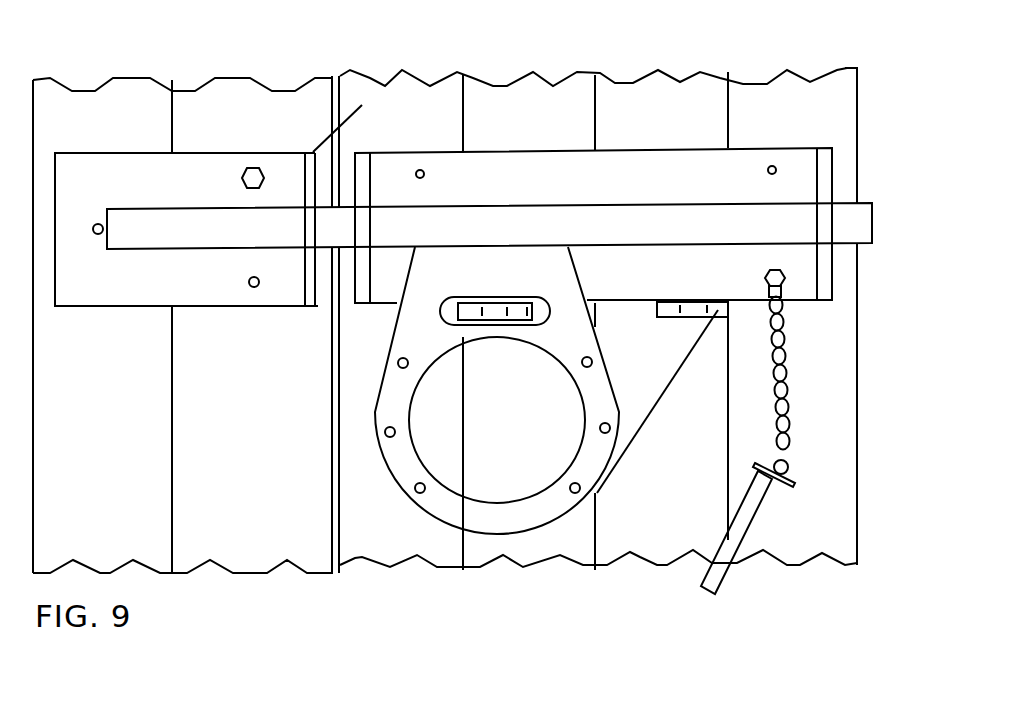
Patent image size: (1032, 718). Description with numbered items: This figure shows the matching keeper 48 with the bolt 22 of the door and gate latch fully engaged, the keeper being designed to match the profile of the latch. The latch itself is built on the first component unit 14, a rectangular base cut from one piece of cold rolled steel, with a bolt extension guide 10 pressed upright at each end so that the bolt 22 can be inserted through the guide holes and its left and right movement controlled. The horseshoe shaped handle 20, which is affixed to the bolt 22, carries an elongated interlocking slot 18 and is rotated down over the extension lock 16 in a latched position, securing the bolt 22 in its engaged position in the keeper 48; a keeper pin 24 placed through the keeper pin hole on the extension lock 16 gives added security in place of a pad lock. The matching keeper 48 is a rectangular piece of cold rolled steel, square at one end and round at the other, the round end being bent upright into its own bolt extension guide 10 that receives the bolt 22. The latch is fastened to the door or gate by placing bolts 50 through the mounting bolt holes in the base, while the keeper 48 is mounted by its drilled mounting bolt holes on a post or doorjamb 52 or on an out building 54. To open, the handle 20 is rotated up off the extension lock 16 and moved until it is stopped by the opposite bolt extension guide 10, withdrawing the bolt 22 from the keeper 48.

The bolt extension guide 10 is at (362, 153).
The first component unit 14 is at (659, 148).
The extension lock 16 is at (584, 511).
The elongated interlocking slot 18 is at (495, 297).
The horseshoe shaped handle 20 is at (477, 473).
The bolt 22 is at (795, 203).
The keeper pin 24 is at (710, 595).
The matching keeper 48 is at (103, 153).
The bolt 50 is at (250, 168).
The doorjamb 52 is at (814, 557).
The out building 54 is at (247, 573).